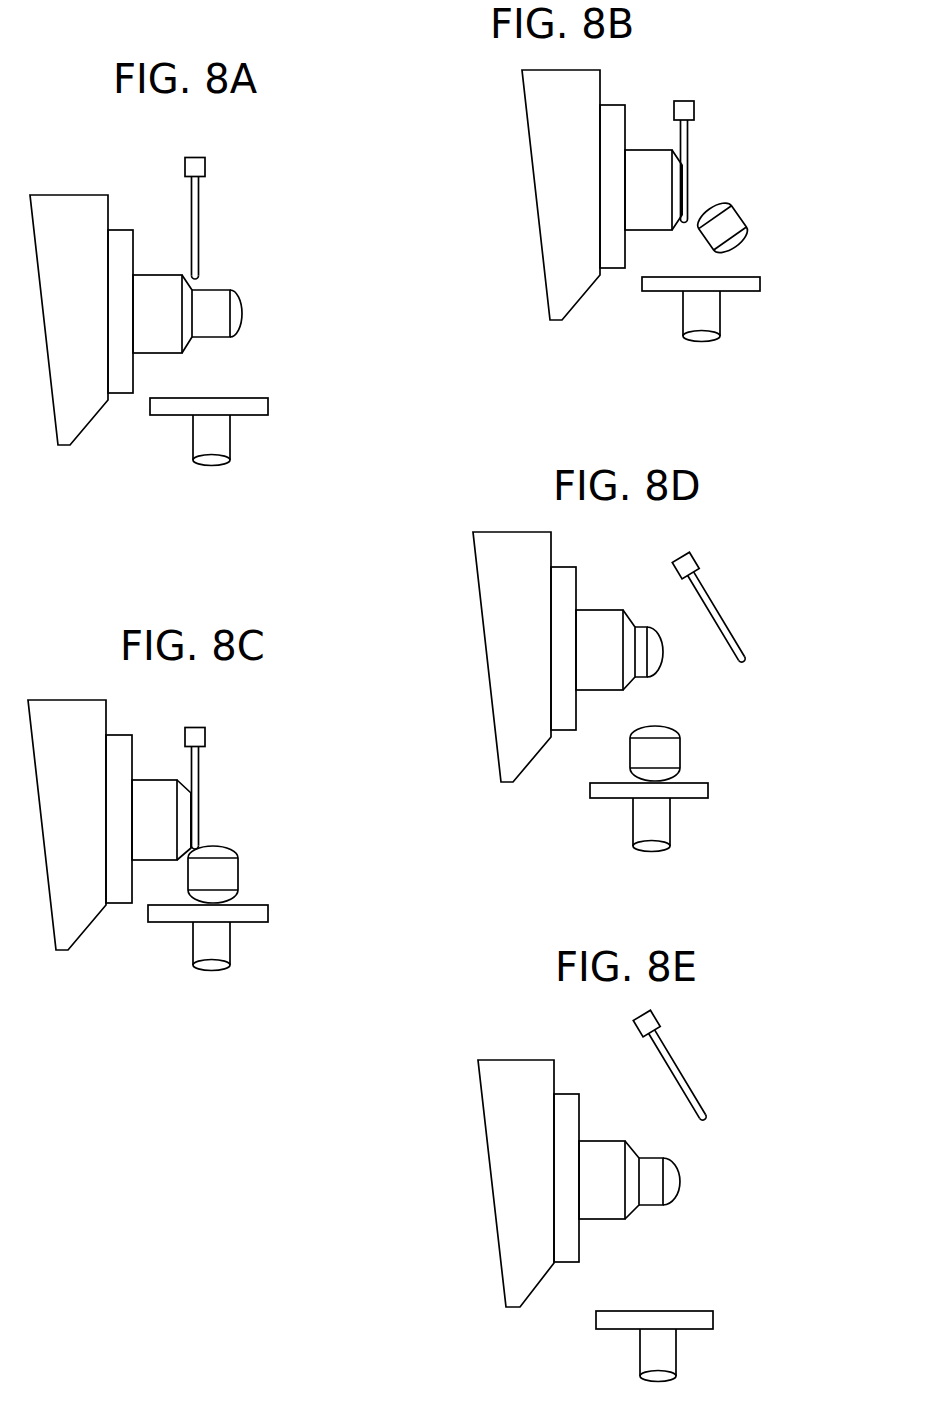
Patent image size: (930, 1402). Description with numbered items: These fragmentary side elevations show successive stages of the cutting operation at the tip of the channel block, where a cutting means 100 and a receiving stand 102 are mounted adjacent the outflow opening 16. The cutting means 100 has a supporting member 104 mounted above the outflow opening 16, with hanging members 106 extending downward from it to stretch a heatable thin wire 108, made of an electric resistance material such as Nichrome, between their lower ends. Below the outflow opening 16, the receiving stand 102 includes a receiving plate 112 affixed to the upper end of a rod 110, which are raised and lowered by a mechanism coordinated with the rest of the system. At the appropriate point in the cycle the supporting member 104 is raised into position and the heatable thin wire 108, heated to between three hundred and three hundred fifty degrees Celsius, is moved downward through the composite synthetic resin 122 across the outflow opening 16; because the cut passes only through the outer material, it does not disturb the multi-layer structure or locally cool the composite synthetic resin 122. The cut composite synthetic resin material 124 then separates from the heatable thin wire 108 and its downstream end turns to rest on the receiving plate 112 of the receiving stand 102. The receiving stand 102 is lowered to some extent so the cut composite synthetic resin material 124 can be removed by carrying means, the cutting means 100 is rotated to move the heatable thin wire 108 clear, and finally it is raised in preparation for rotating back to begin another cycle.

In FIG. 8A, the outflow opening 16 is at (197, 326).
In FIG. 8B, the outflow opening 16 is at (688, 181).
In FIG. 8C, the outflow opening 16 is at (197, 810).
In FIG. 8D, the outflow opening 16 is at (640, 663).
In FIG. 8E, the outflow opening 16 is at (639, 1182).
In FIG. 8A, the cutting means 100 is at (257, 197).
In FIG. 8B, the cutting means 100 is at (734, 162).
In FIG. 8C, the cutting means 100 is at (219, 756).
In FIG. 8D, the cutting means 100 is at (771, 604).
In FIG. 8E, the cutting means 100 is at (727, 1070).
In FIG. 8A, the receiving stand 102 is at (247, 408).
In FIG. 8B, the receiving stand 102 is at (737, 283).
In FIG. 8C, the receiving stand 102 is at (247, 912).
In FIG. 8D, the receiving stand 102 is at (684, 793).
In FIG. 8E, the receiving stand 102 is at (692, 1325).
In FIG. 8A, the supporting member 104 is at (195, 167).
In FIG. 8B, the supporting member 104 is at (684, 110).
In FIG. 8C, the supporting member 104 is at (195, 737).
In FIG. 8D, the supporting member 104 is at (685, 565).
In FIG. 8E, the supporting member 104 is at (646, 1023).
In FIG. 8A, the hanging members 106 is at (195, 226).
In FIG. 8B, the hanging members 106 is at (684, 169).
In FIG. 8C, the hanging members 106 is at (195, 796).
In FIG. 8D, the hanging members 106 is at (716, 616).
In FIG. 8E, the hanging members 106 is at (677, 1074).
In FIG. 8A, the heatable thin wire 108 is at (195, 278).
In FIG. 8B, the heatable thin wire 108 is at (684, 221).
In FIG. 8C, the heatable thin wire 108 is at (195, 848).
In FIG. 8D, the heatable thin wire 108 is at (743, 660).
In FIG. 8E, the heatable thin wire 108 is at (704, 1118).
In FIG. 8A, the rod 110 is at (202, 438).
In FIG. 8B, the rod 110 is at (695, 313).
In FIG. 8C, the rod 110 is at (203, 952).
In FIG. 8D, the rod 110 is at (643, 832).
In FIG. 8E, the rod 110 is at (653, 1364).
In FIG. 8A, the receiving plate 112 is at (243, 398).
In FIG. 8B, the receiving plate 112 is at (752, 277).
In FIG. 8C, the receiving plate 112 is at (258, 905).
In FIG. 8D, the receiving plate 112 is at (701, 783).
In FIG. 8E, the receiving plate 112 is at (707, 1311).
In FIG. 8A, the composite synthetic resin 122 is at (247, 297).
In FIG. 8D, the composite synthetic resin 122 is at (643, 627).
In FIG. 8E, the composite synthetic resin 122 is at (653, 1158).
In FIG. 8B, the cut composite synthetic resin material 124 is at (749, 221).
In FIG. 8C, the cut composite synthetic resin material 124 is at (231, 850).
In FIG. 8D, the cut composite synthetic resin material 124 is at (678, 737).